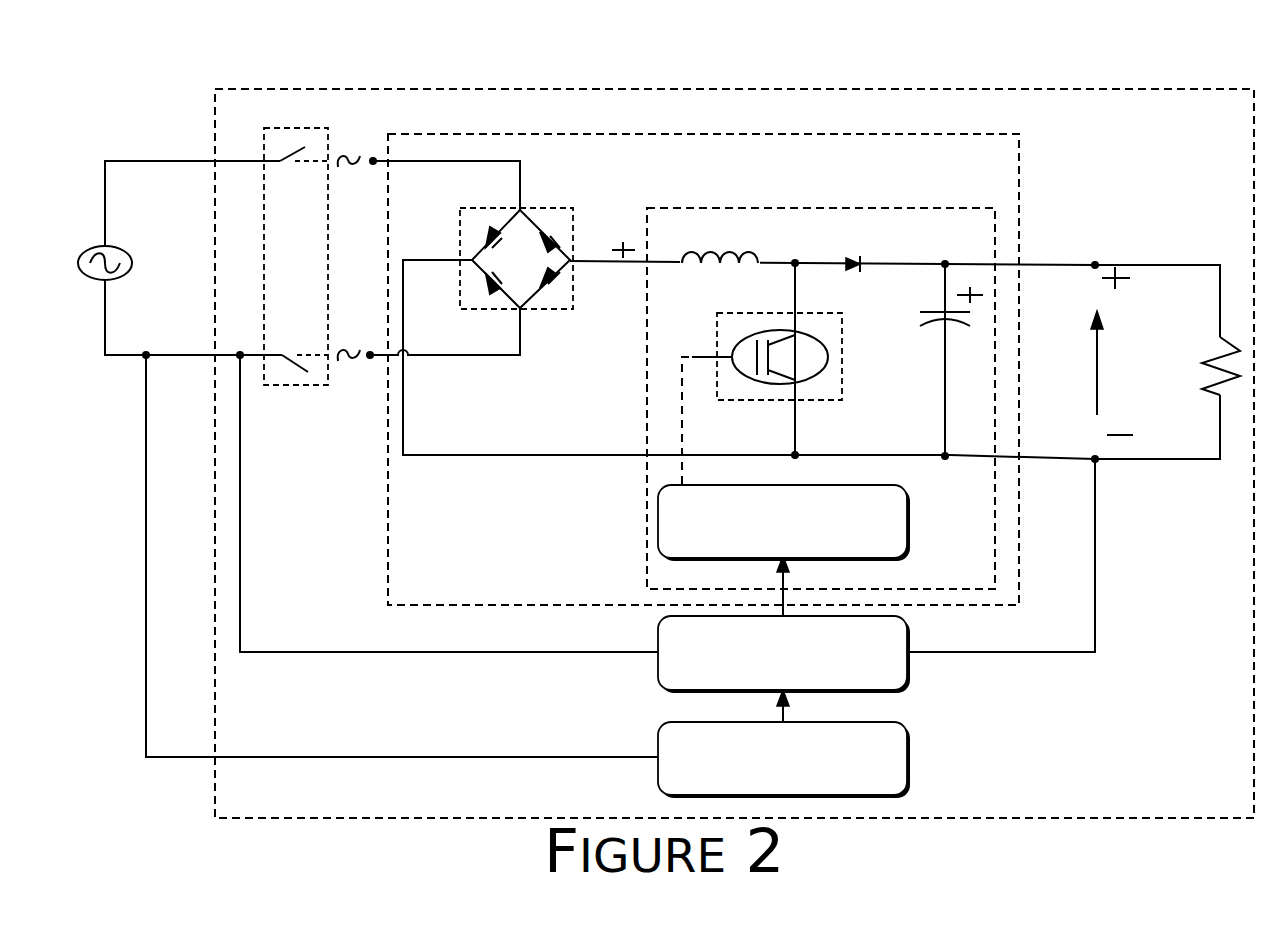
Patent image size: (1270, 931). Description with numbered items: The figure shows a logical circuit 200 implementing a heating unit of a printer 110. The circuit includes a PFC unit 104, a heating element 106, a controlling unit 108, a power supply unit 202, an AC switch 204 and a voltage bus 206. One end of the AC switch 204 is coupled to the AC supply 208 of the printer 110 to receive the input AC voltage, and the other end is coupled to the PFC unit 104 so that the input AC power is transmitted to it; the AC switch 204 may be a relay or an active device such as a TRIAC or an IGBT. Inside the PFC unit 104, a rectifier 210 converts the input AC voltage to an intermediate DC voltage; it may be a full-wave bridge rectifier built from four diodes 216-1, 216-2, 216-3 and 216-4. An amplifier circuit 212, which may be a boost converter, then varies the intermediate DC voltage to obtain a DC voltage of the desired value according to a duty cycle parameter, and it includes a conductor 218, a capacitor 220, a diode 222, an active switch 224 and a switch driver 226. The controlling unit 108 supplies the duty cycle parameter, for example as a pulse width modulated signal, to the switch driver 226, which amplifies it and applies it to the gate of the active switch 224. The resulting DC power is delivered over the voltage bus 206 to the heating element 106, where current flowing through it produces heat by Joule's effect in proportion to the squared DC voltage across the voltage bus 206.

The printer 110 is at (734, 433).
The logical circuit 200 is at (858, 89).
The PFC unit 104 is at (703, 136).
The AC switch 204 is at (297, 128).
The AC supply 208 is at (113, 248).
The rectifier 210 is at (523, 256).
The diode 216-1 is at (560, 245).
The diode 216-2 is at (560, 275).
The diode 216-3 is at (495, 287).
The diode 216-4 is at (493, 235).
The amplifier circuit 212 is at (822, 210).
The conductor 218 is at (713, 253).
The diode 222 is at (858, 268).
The active switch 224 is at (820, 313).
The capacitor 220 is at (932, 317).
The voltage bus 206 is at (1130, 265).
The heating element 106 is at (1203, 362).
The switch driver 226 is at (784, 523).
The controlling unit 108 is at (784, 654).
The power supply unit 202 is at (784, 760).